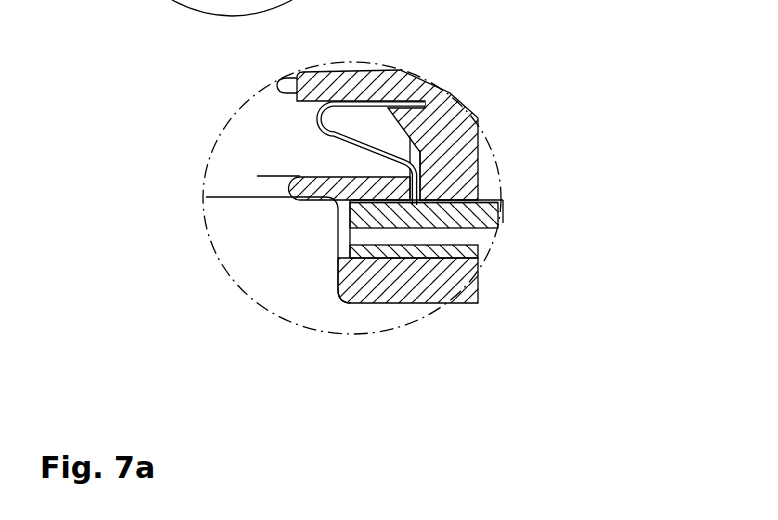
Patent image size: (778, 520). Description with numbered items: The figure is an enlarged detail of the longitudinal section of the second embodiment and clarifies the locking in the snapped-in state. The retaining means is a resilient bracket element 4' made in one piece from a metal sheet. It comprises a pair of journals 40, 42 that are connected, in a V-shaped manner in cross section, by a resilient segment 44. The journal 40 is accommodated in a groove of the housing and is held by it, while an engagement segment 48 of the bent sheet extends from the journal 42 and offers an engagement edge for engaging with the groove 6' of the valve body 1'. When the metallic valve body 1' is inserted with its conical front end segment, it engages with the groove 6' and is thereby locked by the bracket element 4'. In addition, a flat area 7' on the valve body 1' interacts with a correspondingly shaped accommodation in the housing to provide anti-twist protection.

The journal 40 is at (357, 103).
The engagement segment 48 is at (424, 198).
The resilient segment 44 is at (318, 124).
The resilient bracket element 4' is at (412, 113).
The journal 42 is at (273, 93).
The groove 6' is at (501, 170).
The valve body 1' is at (490, 228).
The flat area 7' is at (349, 329).